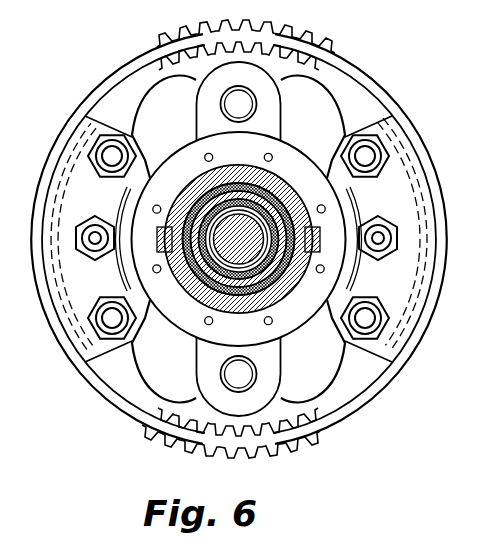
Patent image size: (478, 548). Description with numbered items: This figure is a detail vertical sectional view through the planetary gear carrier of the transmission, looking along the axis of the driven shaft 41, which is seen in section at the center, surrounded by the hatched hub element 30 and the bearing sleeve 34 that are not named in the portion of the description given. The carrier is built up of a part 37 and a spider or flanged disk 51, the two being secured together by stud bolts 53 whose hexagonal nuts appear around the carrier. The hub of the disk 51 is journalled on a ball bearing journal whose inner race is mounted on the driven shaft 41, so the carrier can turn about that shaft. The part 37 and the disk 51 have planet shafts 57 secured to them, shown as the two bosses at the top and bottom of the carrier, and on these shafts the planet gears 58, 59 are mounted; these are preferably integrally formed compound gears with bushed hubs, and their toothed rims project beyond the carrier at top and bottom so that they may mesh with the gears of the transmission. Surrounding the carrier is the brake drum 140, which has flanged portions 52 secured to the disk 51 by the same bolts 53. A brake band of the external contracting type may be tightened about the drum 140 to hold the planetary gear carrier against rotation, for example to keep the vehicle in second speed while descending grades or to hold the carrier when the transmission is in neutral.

The hub 30 is at (207, 257).
The bearing sleeve 34 is at (240, 288).
The part of planetary gear carrier 37 is at (333, 106).
The driven shaft 41 is at (255, 234).
The spider or flanged disk 51 is at (368, 118).
The flanged portions 52 is at (80, 288).
The stud bolts 53 is at (110, 155).
The planet shafts 57 is at (232, 106).
The planet gear 58 is at (262, 52).
The planet gear 59 is at (218, 34).
The brake drum 140 is at (367, 390).